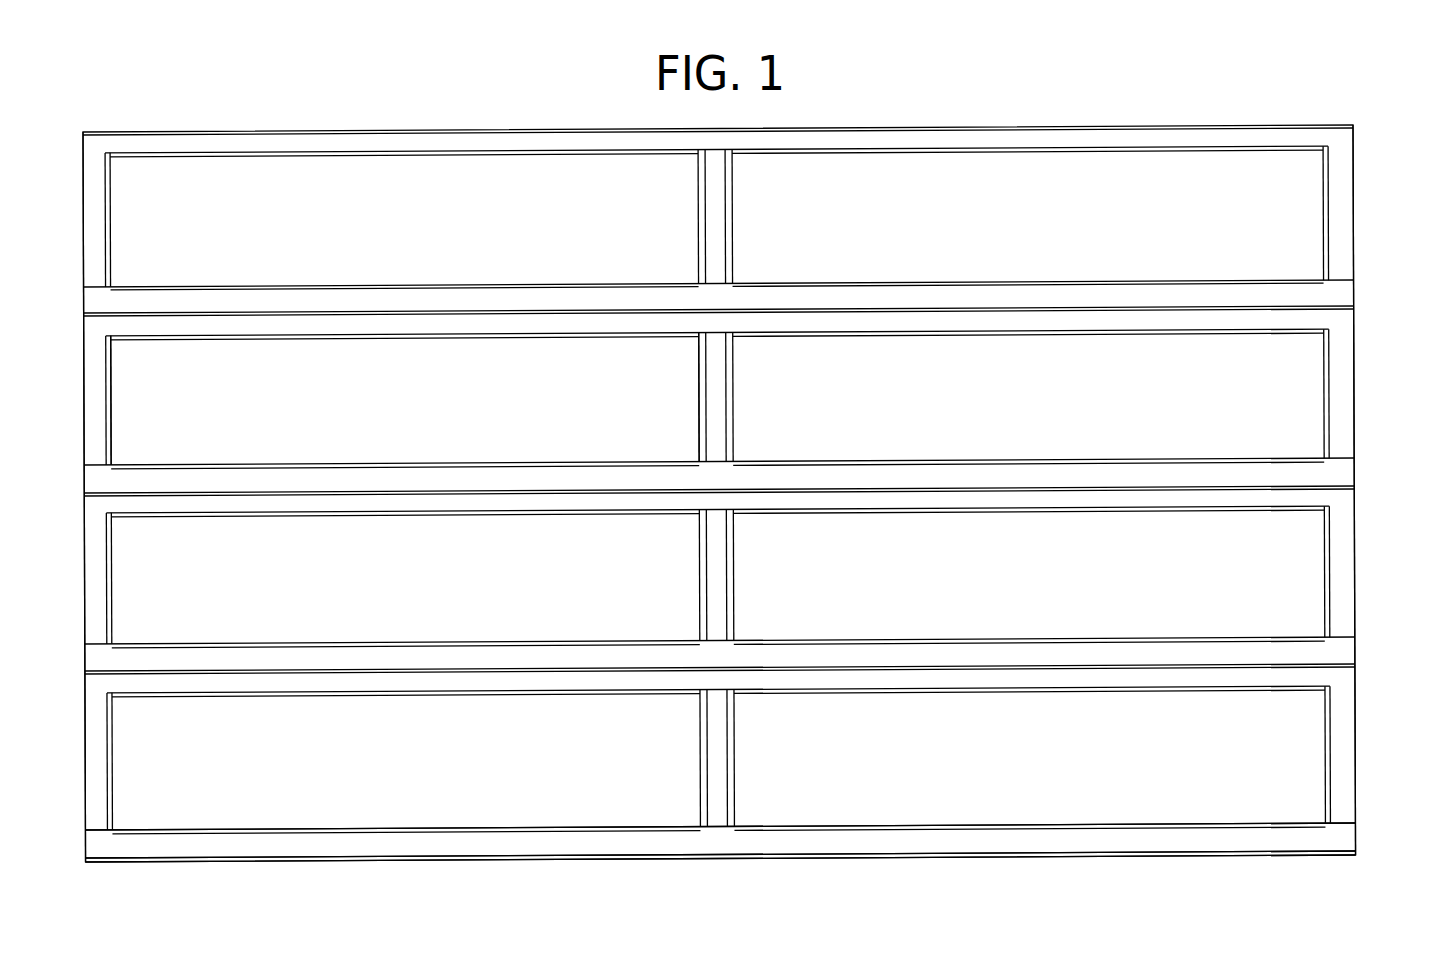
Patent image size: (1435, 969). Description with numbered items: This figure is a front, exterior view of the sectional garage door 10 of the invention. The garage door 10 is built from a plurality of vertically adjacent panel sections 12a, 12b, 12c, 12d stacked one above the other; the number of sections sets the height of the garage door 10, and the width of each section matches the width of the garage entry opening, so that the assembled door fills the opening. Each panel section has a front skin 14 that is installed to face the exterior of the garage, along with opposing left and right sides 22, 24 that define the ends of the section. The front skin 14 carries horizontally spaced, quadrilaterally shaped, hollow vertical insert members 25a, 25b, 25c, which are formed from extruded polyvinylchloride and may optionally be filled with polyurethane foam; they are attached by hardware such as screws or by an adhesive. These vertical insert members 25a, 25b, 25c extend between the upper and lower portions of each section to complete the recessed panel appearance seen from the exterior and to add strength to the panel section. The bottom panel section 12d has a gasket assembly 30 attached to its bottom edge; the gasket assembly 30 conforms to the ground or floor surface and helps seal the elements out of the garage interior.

The sectional garage door 10 is at (1376, 197).
The panel section 12a is at (848, 226).
The panel section 12b is at (748, 412).
The panel section 12c is at (838, 597).
The bottom panel section 12d is at (840, 772).
The front skin 14 is at (155, 448).
The left side 22 is at (83, 392).
The right side 24 is at (1355, 348).
The vertical insert member 25a is at (102, 358).
The vertical insert member 25b is at (711, 348).
The vertical insert member 25c is at (1351, 404).
The gasket assembly 30 is at (101, 868).